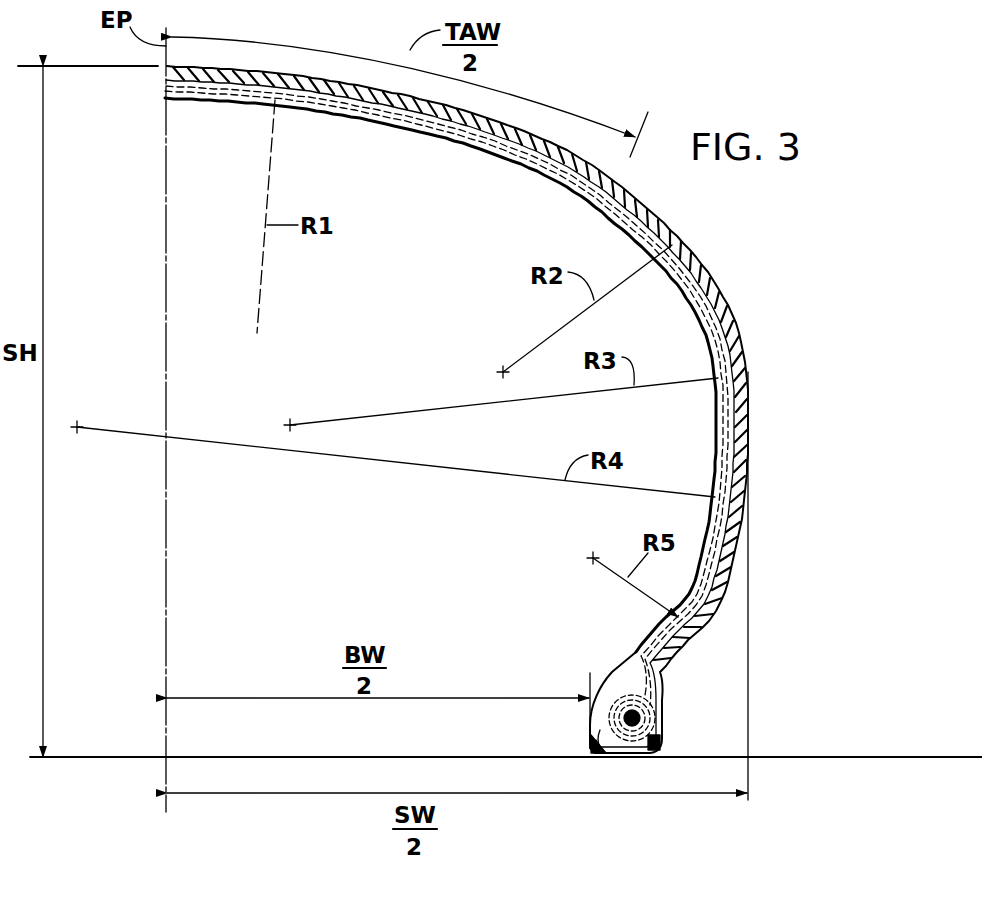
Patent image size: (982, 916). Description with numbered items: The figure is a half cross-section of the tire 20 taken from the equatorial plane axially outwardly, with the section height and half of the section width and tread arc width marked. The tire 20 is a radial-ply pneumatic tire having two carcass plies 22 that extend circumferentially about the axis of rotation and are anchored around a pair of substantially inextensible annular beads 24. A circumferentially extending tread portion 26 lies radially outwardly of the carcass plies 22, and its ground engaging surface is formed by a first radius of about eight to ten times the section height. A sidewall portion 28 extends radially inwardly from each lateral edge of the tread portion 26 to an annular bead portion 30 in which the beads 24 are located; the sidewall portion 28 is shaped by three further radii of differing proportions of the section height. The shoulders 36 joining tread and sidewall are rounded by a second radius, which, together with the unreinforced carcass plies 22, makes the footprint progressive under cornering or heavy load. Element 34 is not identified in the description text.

The tire 20 is at (655, 137).
The carcass plies 22 is at (448, 123).
The beads 24 is at (655, 708).
The tread portion 26 is at (487, 113).
The sidewall portion 28 is at (748, 392).
The bead portion 30 is at (660, 746).
The tread 34 is at (330, 80).
The shoulders 36 is at (675, 202).